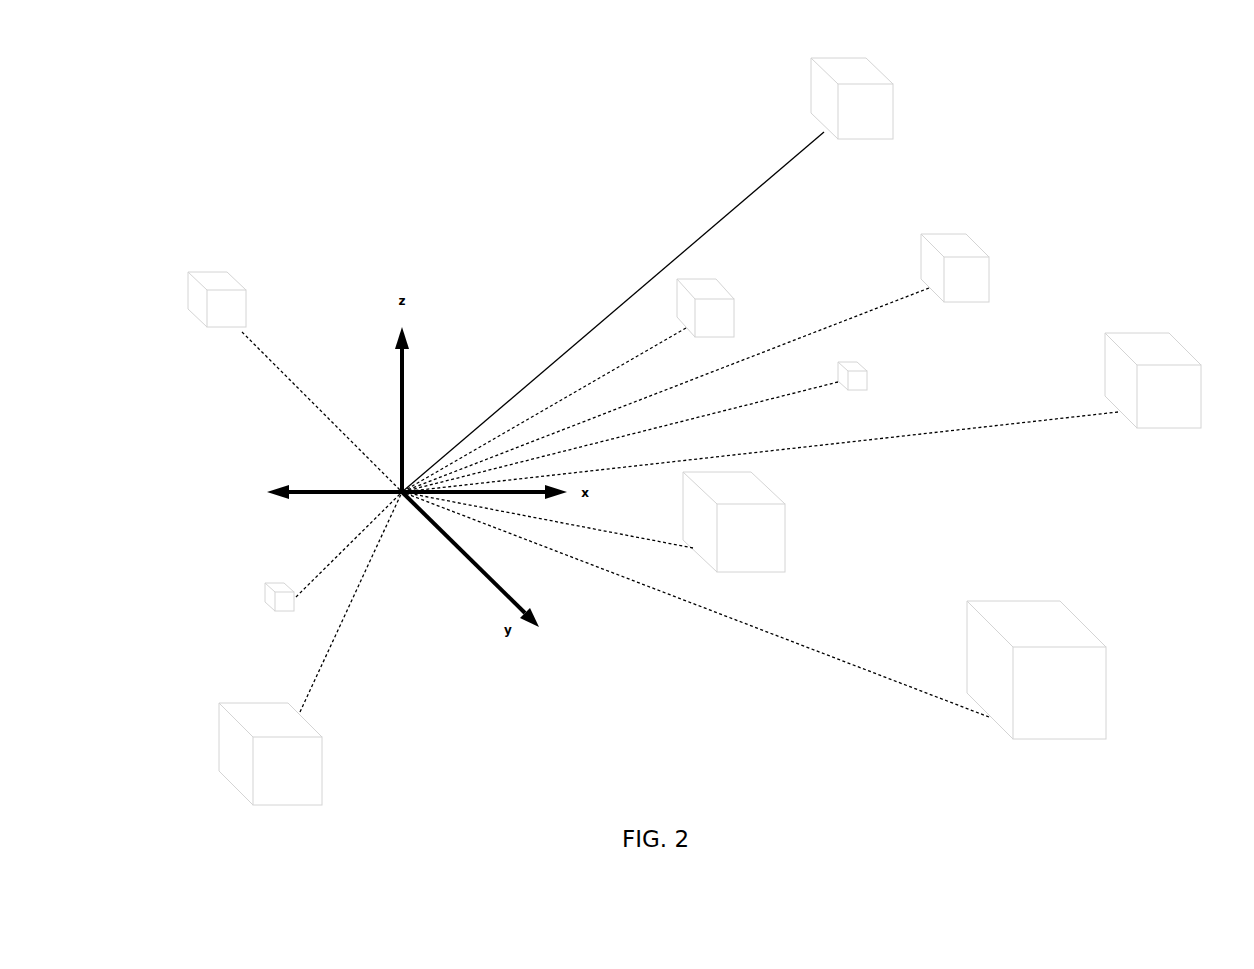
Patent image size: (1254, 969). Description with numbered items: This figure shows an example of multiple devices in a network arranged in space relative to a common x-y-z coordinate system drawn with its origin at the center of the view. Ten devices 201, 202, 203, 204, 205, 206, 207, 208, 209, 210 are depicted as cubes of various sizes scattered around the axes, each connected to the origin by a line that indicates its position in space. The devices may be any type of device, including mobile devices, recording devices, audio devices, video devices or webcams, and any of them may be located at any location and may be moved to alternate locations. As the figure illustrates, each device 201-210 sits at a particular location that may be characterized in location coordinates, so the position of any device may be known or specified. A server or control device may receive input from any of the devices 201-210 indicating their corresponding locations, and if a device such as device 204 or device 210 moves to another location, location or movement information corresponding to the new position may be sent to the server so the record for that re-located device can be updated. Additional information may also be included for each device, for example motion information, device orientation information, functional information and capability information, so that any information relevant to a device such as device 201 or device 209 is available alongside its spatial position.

The device 201 is at (176, 290).
The device 202 is at (263, 588).
The device 203 is at (218, 715).
The device 204 is at (796, 70).
The device 205 is at (734, 290).
The device 206 is at (994, 280).
The device 207 is at (867, 371).
The device 208 is at (1187, 339).
The device 209 is at (789, 533).
The device 210 is at (1006, 595).